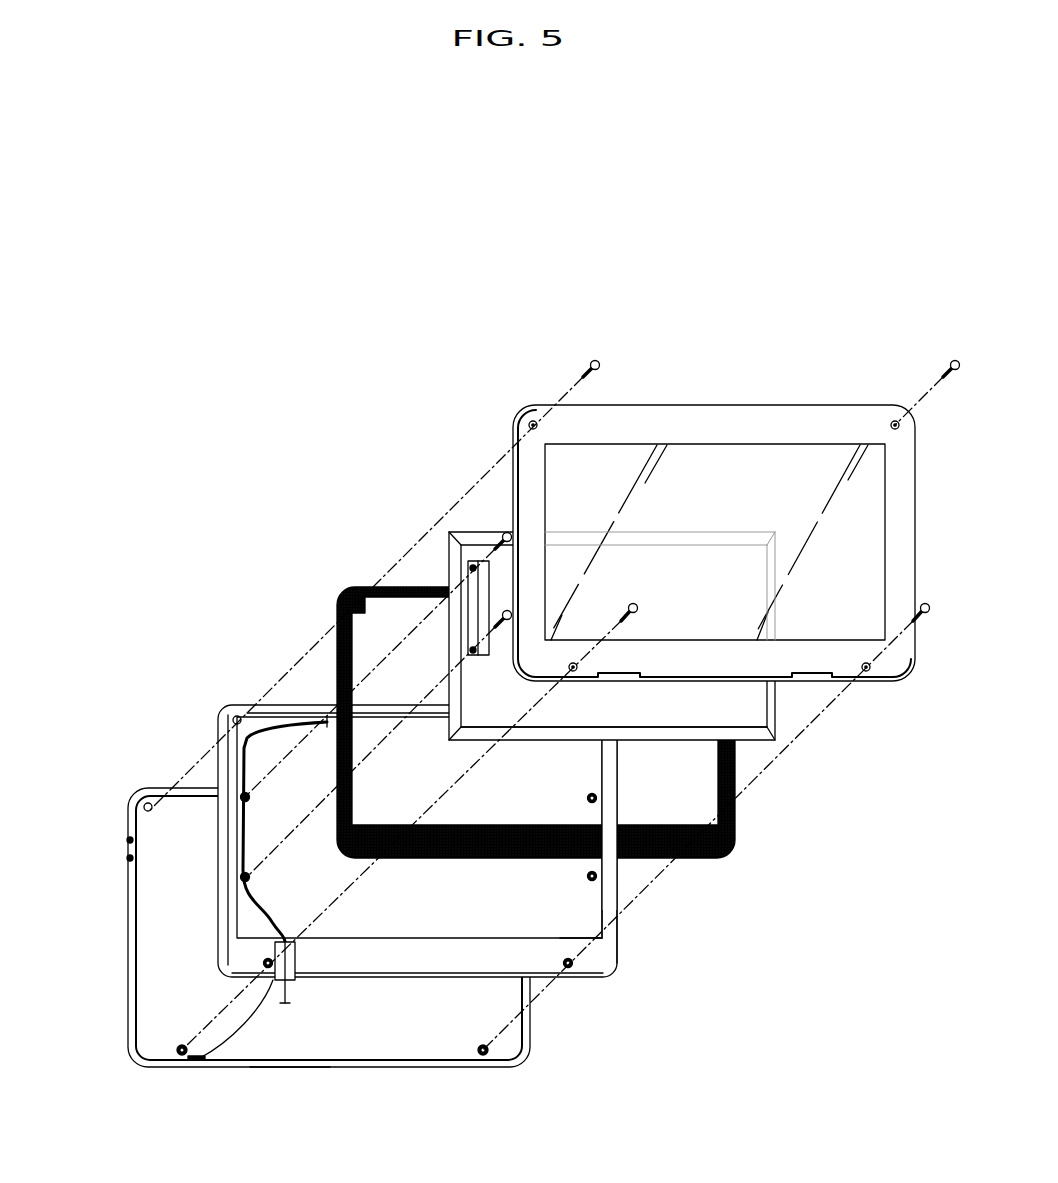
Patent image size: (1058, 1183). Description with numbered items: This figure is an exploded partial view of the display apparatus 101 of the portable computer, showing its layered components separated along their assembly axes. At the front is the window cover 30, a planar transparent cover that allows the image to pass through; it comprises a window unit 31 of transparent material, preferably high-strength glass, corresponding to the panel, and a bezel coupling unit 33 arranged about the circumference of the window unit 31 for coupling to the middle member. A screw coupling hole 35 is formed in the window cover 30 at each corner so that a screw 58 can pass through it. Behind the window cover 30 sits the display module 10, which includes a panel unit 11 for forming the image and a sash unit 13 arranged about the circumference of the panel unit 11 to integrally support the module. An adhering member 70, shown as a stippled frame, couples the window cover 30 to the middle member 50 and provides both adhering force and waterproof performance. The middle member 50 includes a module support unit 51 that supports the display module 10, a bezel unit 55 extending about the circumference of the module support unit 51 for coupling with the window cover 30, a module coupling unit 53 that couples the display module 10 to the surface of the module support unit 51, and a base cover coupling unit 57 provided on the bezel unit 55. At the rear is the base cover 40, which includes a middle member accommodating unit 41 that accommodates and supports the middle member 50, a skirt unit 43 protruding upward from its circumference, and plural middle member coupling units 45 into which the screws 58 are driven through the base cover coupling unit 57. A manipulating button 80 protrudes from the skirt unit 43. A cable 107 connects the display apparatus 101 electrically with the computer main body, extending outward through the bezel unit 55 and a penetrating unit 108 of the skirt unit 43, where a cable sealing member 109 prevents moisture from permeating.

The display apparatus 101 is at (296, 379).
The screw 58 is at (591, 362).
The window cover 30 is at (697, 492).
The bezel coupling unit 33 is at (665, 405).
The window unit 31 is at (757, 455).
The screw coupling hole 35 is at (527, 417).
The panel unit 11 is at (757, 690).
The sash unit 13 is at (772, 735).
The display module 10 is at (666, 672).
The adhering member 70 is at (733, 855).
The module coupling unit 53 is at (598, 877).
The bezel unit 55 is at (573, 926).
The module support unit 51 is at (571, 948).
The base cover coupling unit 57 is at (573, 963).
The middle member 50 is at (334, 841).
The manipulating button 80 is at (128, 858).
The cable sealing member 109 is at (270, 950).
The penetrating unit 108 is at (200, 1064).
The cable 107 is at (285, 1006).
The skirt unit 43 is at (290, 1068).
The middle member accommodating unit 41 is at (370, 1052).
The middle member coupling unit 45 is at (483, 1087).
The base cover 40 is at (329, 980).